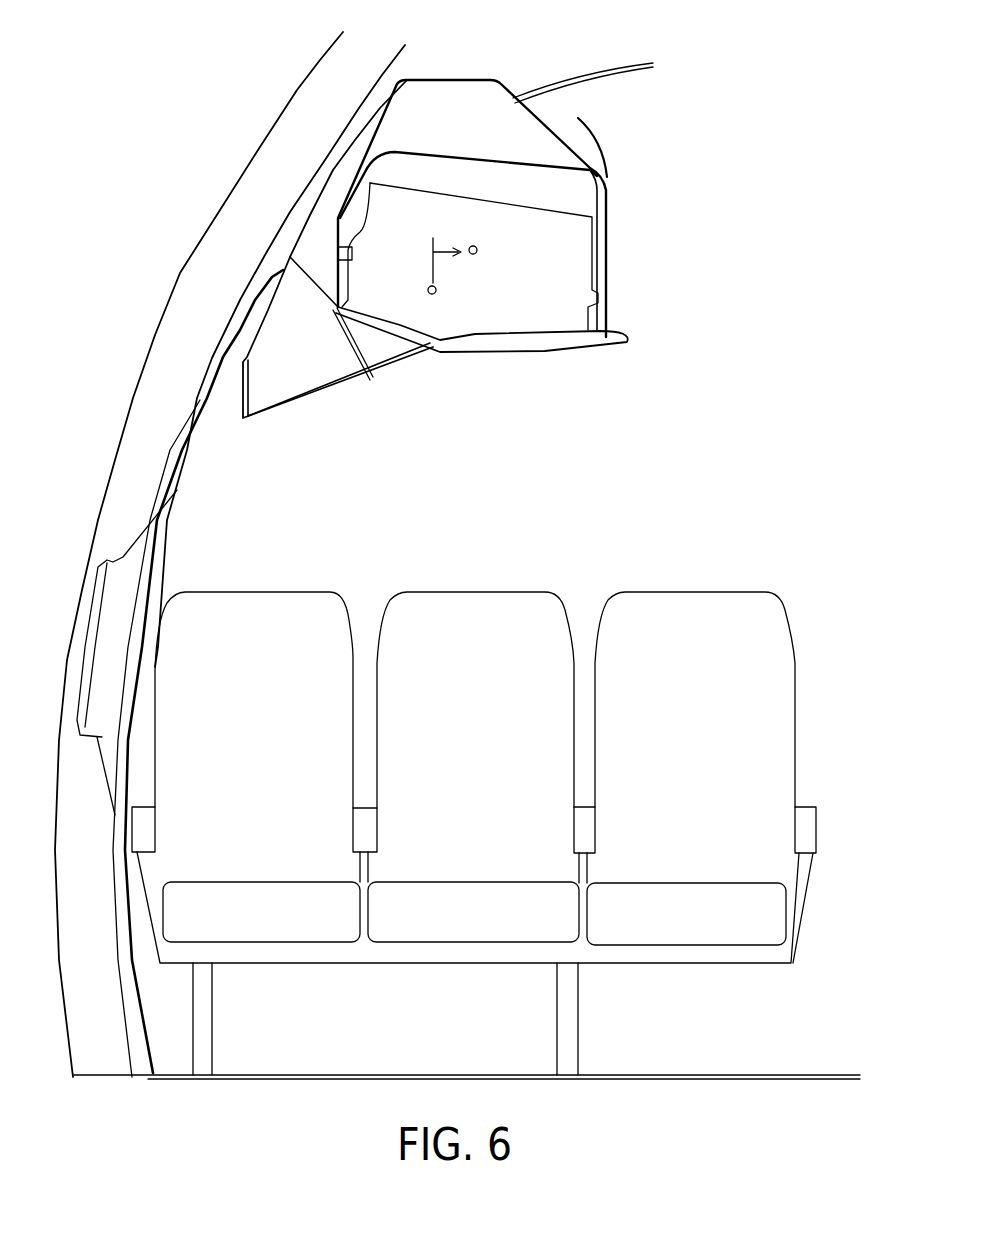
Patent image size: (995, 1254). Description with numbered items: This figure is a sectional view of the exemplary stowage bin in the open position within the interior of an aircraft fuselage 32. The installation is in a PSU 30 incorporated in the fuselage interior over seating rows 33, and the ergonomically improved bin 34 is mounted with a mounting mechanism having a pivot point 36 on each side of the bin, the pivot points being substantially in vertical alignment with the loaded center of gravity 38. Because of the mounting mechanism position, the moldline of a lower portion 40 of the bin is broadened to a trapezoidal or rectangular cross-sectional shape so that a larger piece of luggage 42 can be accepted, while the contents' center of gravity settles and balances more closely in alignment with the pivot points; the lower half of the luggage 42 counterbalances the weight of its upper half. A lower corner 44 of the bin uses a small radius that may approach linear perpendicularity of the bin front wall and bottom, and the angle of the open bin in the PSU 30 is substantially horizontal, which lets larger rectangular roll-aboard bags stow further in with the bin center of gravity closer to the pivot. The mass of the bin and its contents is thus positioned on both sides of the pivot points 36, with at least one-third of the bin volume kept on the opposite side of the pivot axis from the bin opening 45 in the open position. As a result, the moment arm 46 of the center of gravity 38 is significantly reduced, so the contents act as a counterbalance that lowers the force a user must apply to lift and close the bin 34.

The PSU 30 is at (462, 276).
The aircraft fuselage 32 is at (245, 155).
The seating rows 33 is at (689, 650).
The bin 34 is at (553, 355).
The pivot point 36 is at (437, 288).
The loaded center of gravity 38 is at (477, 246).
The lower portion 40 is at (468, 276).
The luggage 42 is at (563, 265).
The lower corner 44 is at (335, 312).
The bin opening 45 is at (612, 255).
The moment arm 46 is at (450, 243).